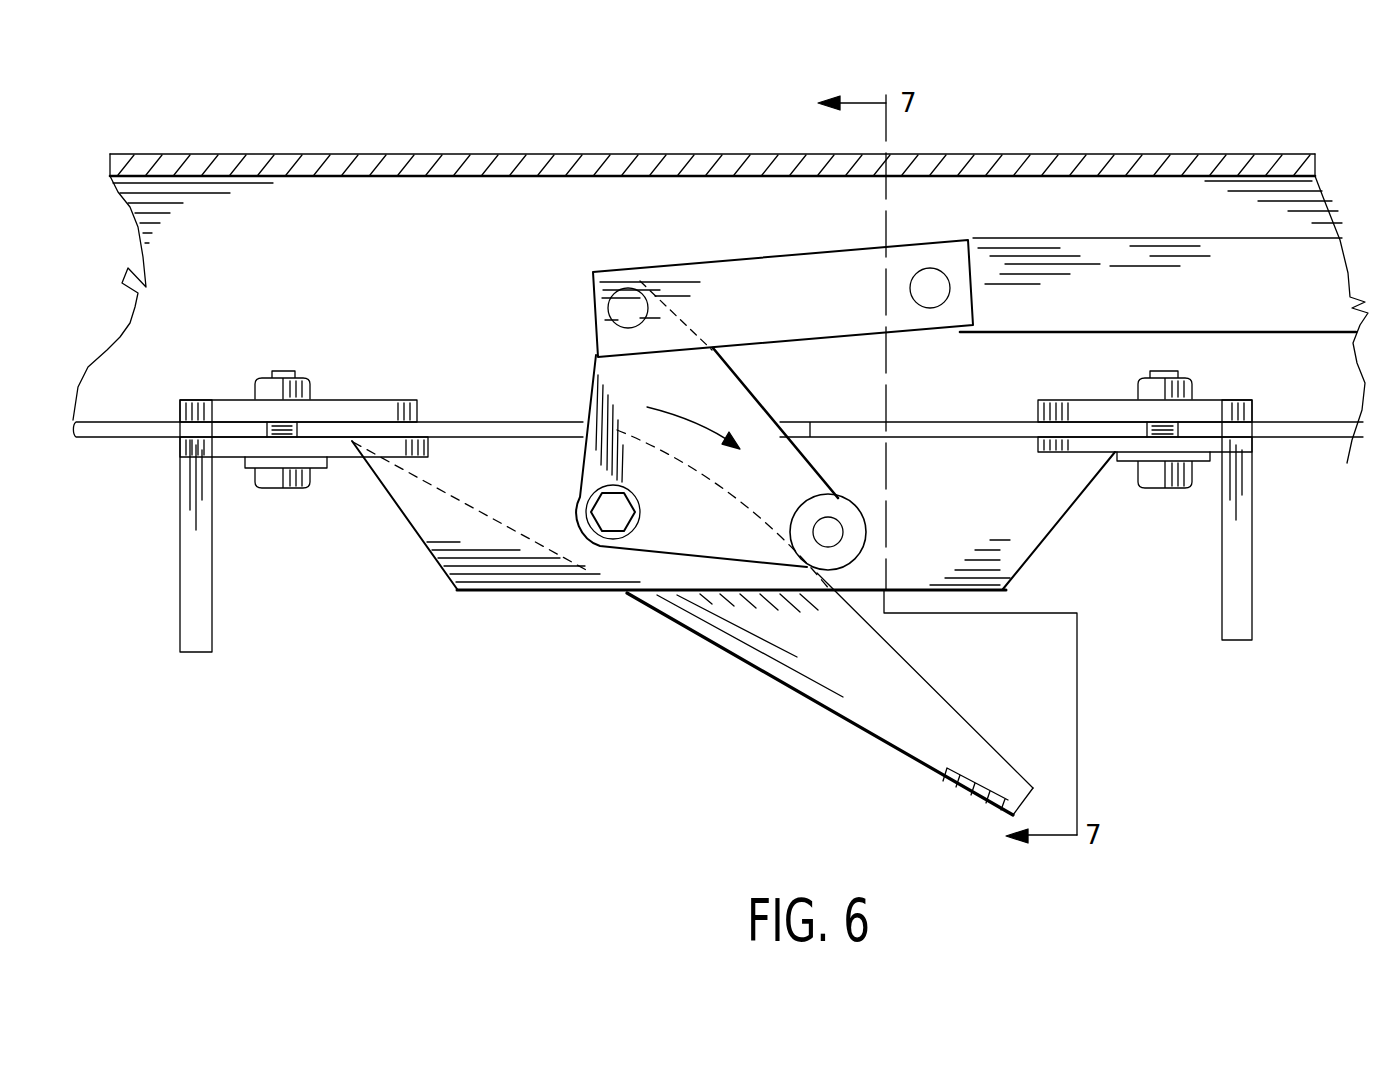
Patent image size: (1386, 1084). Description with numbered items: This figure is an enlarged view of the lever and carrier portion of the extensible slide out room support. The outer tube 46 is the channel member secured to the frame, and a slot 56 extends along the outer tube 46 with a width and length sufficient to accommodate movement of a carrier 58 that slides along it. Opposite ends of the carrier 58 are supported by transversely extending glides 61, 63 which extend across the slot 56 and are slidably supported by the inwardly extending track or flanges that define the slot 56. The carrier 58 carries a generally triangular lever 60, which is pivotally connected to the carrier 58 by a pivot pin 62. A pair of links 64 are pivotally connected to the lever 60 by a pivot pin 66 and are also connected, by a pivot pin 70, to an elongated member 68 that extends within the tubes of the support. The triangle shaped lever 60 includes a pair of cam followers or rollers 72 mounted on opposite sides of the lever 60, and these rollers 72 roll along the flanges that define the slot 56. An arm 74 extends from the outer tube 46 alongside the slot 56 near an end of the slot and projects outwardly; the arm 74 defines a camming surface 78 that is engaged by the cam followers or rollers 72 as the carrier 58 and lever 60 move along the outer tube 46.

The outer tube 46 is at (578, 154).
The slot 56 is at (133, 430).
The carrier 58 is at (378, 514).
The lever 60 is at (764, 460).
The glide 61 is at (360, 410).
The pivot pin 62 is at (616, 515).
The glide 63 is at (1082, 412).
The links 64 is at (783, 275).
The pivot pin 66 is at (628, 300).
The elongated member 68 is at (1148, 275).
The pivot pin 70 is at (930, 286).
The cam followers 72 is at (856, 530).
The arm 74 is at (830, 694).
The camming surface 78 is at (916, 663).